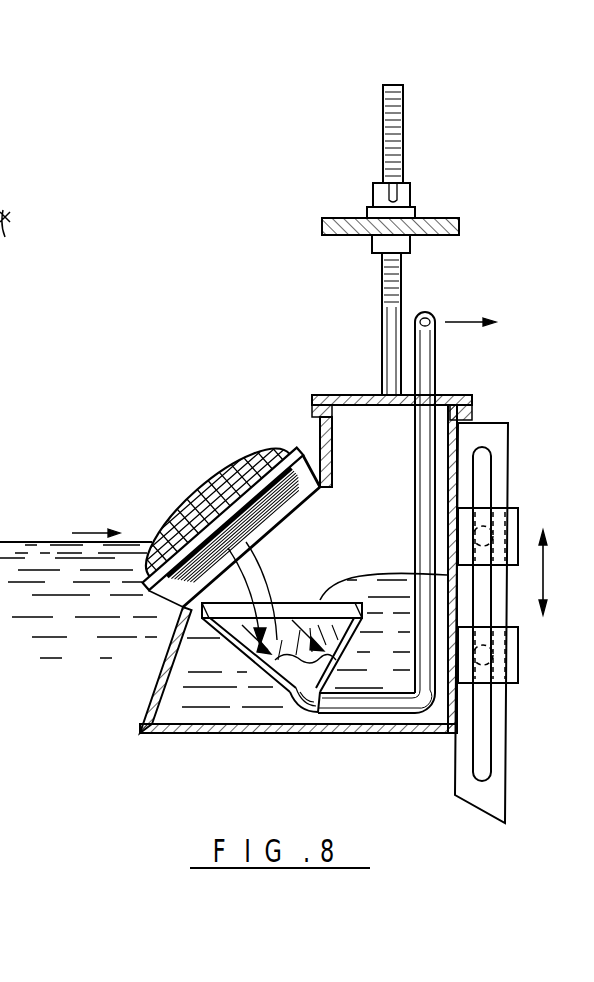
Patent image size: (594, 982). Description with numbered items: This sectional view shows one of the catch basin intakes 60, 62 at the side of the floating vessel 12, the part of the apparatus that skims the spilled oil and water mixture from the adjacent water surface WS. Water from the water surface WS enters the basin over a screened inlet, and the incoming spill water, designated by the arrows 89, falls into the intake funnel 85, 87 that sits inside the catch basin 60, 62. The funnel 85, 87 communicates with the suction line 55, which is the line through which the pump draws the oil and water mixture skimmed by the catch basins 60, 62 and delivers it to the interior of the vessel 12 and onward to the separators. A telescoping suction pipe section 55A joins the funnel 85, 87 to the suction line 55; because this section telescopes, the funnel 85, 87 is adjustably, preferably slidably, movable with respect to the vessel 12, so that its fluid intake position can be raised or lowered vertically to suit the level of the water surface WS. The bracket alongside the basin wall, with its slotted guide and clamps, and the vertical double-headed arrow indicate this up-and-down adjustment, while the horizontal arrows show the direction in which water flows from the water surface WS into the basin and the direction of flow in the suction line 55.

The floating vessel 12 is at (337, 388).
The suction line 55 is at (407, 512).
The telescoping suction pipe section 55A is at (414, 503).
The catch basin 60 is at (298, 592).
The catch basin 62 is at (328, 735).
The intake funnel 85 is at (212, 657).
The intake funnel 87 is at (240, 650).
The incoming spill water flow arrows 89 is at (322, 640).
The water surface WS is at (26, 538).